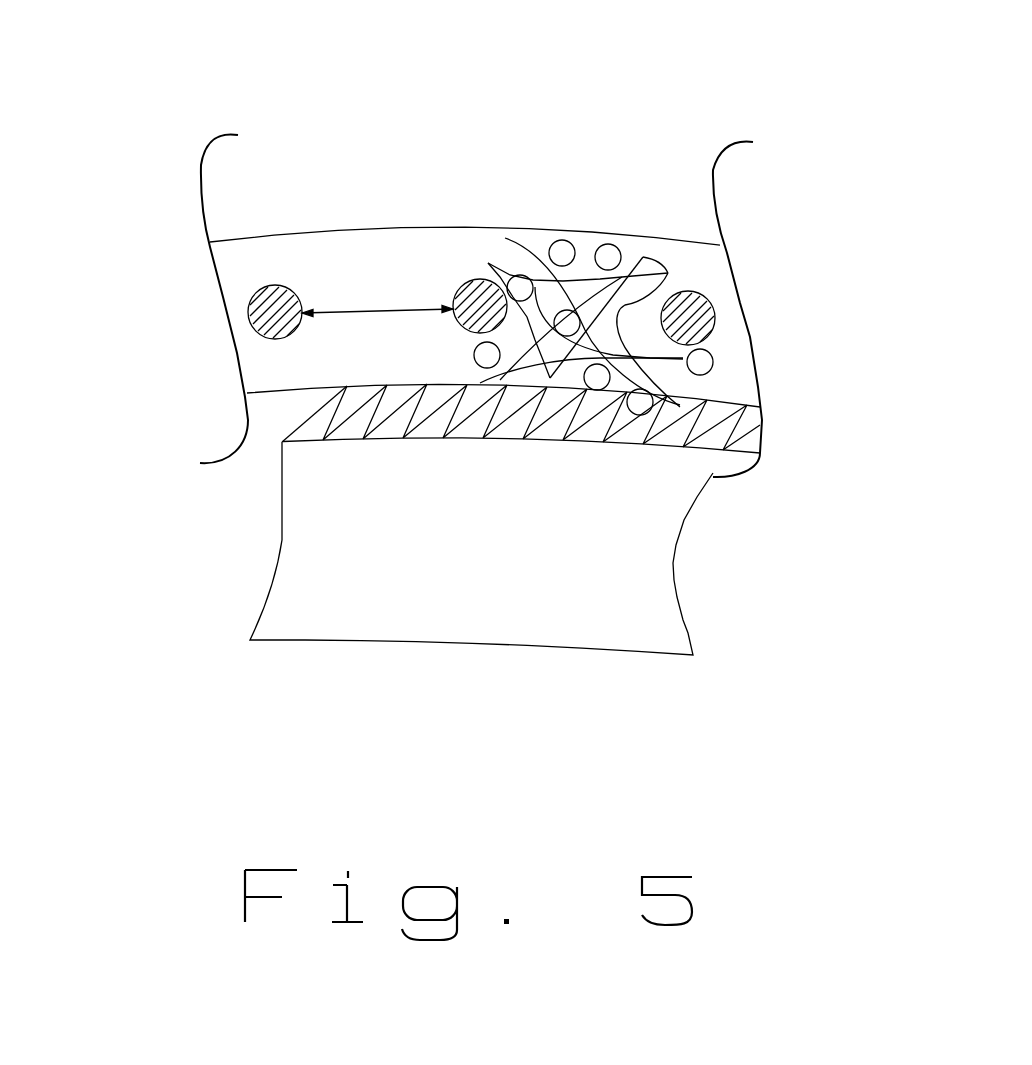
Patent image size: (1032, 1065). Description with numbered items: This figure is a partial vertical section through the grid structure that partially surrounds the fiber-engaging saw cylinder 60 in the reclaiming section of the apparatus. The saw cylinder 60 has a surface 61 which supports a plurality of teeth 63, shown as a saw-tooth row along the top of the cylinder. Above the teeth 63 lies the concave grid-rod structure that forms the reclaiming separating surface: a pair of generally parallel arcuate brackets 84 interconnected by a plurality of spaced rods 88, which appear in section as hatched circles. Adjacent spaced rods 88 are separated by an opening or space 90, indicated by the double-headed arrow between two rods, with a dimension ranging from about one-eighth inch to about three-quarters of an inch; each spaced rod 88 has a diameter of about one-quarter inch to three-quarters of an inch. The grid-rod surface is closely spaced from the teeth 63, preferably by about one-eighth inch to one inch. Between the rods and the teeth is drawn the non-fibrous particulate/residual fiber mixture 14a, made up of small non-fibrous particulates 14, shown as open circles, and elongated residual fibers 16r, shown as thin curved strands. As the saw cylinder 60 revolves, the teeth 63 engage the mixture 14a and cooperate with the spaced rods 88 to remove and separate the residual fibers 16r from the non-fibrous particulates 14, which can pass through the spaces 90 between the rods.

The non-fibrous particulates 14 is at (713, 360).
The non-fibrous particulate/residual fiber mixture 14a is at (565, 247).
The residual fibers 16r is at (648, 273).
The saw cylinder 60 is at (683, 610).
The surface 61 is at (303, 440).
The teeth 63 is at (303, 423).
The arcuate brackets 84 is at (450, 252).
The spaced rods 88 is at (277, 284).
The space 90 is at (383, 310).